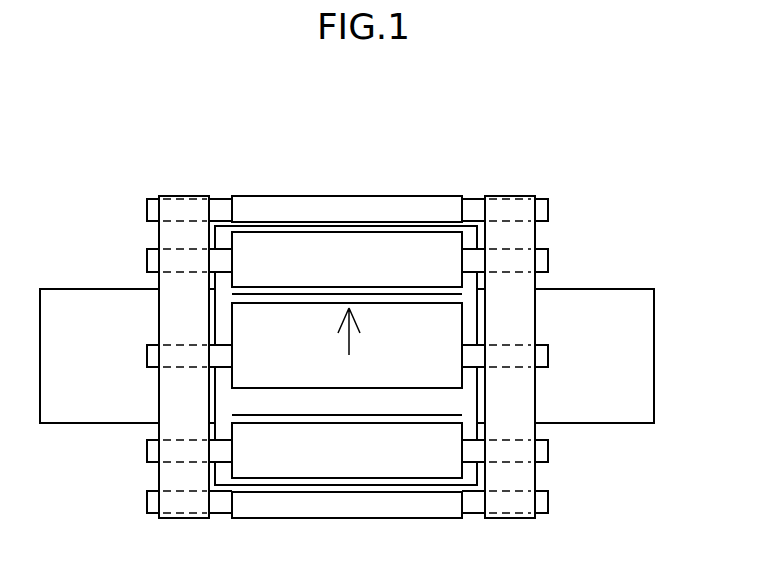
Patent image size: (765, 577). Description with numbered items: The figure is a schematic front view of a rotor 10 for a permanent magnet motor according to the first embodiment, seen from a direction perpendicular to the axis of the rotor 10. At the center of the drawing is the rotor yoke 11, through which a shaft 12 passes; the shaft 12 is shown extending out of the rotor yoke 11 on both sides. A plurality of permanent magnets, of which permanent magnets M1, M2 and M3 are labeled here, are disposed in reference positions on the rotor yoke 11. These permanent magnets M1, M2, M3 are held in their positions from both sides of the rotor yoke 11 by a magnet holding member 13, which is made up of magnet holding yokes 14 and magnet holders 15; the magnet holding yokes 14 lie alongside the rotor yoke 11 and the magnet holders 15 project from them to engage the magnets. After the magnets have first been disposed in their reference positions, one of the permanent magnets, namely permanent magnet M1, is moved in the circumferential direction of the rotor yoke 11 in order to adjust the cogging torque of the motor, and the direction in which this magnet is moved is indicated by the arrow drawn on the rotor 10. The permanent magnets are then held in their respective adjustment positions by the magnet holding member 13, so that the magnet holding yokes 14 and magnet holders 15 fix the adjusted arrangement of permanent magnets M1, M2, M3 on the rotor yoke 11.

The rotor 10 is at (568, 147).
The rotor yoke 11 is at (452, 402).
The shaft 12 is at (602, 307).
The magnet holding member 13 is at (158, 172).
The magnet holding yoke 14 is at (172, 232).
The magnet holder 15 is at (148, 207).
The permanent magnet M1 is at (415, 315).
The permanent magnet M2 is at (360, 257).
The permanent magnet M3 is at (308, 207).